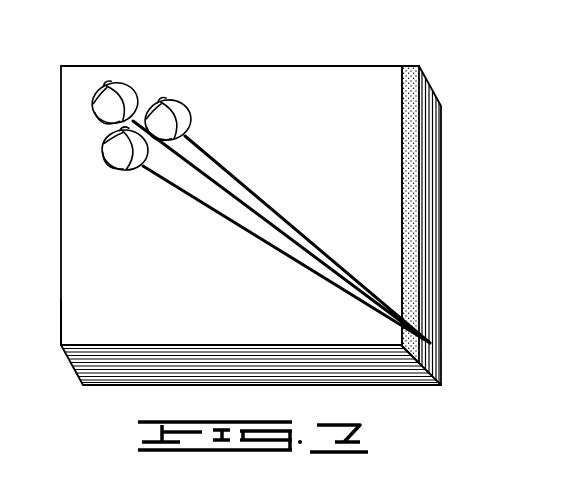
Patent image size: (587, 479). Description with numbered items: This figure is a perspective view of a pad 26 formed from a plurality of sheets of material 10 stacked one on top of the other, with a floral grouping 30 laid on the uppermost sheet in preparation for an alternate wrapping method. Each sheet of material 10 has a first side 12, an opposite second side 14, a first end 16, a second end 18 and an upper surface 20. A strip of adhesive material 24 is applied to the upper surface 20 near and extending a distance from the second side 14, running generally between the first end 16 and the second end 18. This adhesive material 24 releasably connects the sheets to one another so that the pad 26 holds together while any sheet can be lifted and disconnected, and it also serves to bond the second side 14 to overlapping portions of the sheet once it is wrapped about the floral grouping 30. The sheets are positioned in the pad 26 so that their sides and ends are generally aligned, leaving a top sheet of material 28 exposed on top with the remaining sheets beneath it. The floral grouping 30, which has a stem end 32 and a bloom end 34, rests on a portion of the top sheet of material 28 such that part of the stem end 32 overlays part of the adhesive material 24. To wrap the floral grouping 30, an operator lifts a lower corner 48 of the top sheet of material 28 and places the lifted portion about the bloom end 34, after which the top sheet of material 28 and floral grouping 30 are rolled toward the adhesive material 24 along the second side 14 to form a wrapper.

The sheet of material 10 is at (449, 247).
The first side 12 is at (82, 189).
The second side 14 is at (420, 163).
The first end 16 is at (133, 64).
The second end 18 is at (307, 350).
The upper surface 20 is at (326, 196).
The adhesive material 24 is at (410, 126).
The pad 26 is at (461, 58).
The top sheet of material 28 is at (318, 86).
The floral grouping 30 is at (235, 120).
The stem end 32 is at (384, 317).
The bloom end 34 is at (180, 106).
The lower corner 48 is at (97, 322).